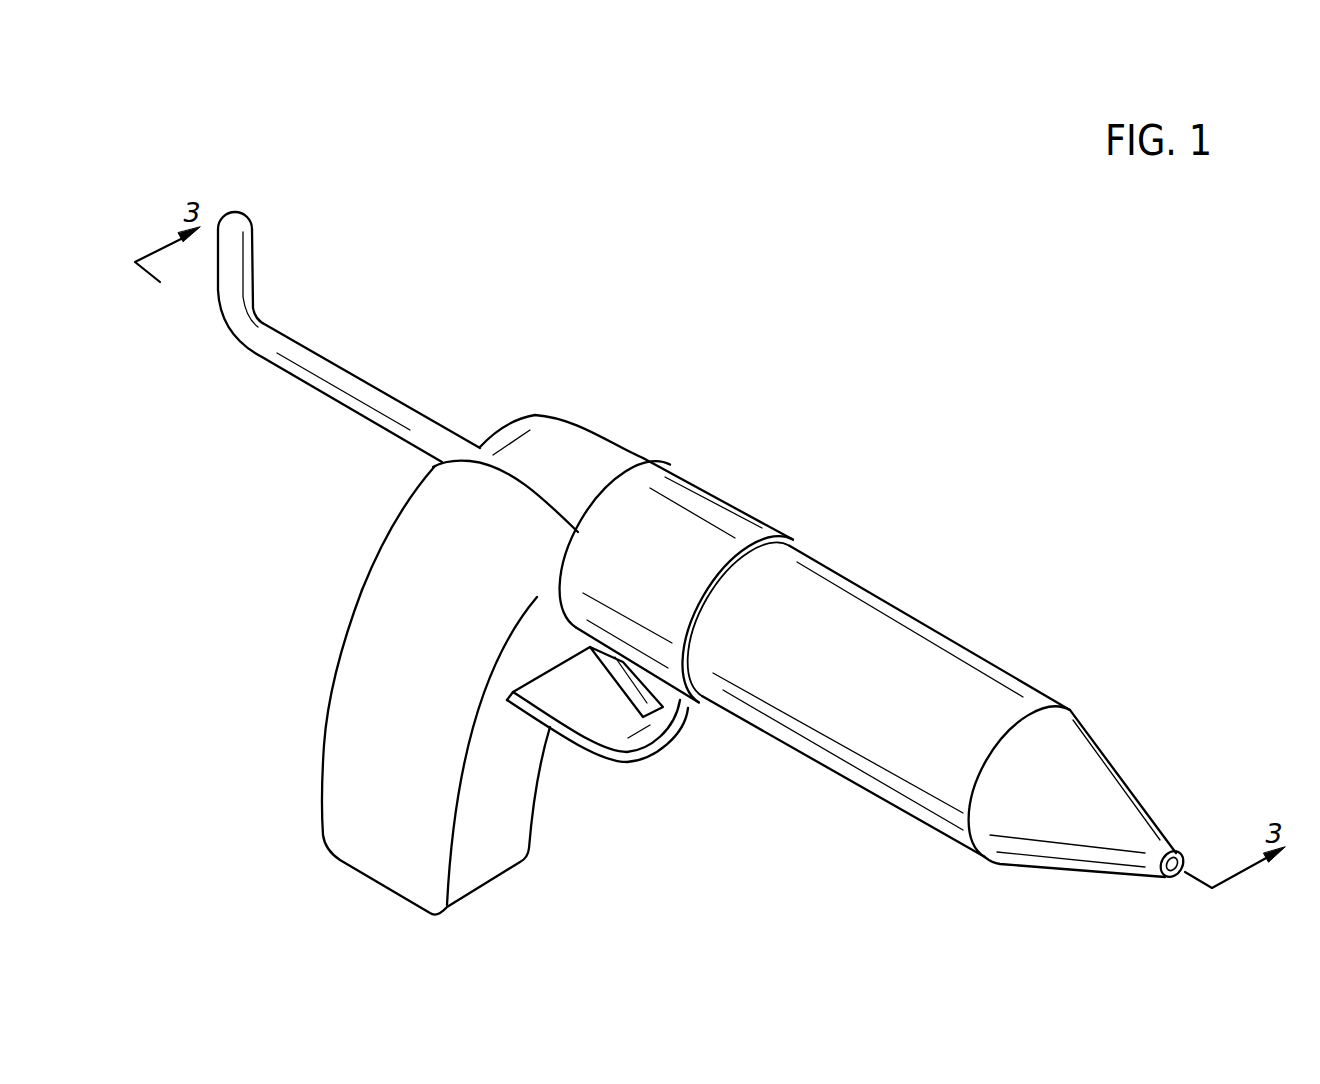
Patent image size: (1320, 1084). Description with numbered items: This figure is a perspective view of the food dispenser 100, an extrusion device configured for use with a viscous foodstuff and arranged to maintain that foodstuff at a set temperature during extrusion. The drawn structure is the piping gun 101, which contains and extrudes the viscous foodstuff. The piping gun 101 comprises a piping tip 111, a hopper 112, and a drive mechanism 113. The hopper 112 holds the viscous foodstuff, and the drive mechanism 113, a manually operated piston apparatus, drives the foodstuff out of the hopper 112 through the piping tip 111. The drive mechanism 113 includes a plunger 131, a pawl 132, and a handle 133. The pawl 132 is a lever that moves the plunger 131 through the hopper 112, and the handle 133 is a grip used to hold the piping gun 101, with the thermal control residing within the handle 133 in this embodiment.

The food dispenser 100 is at (178, 170).
The piping gun 101 is at (560, 416).
The piping tip 111 is at (1095, 787).
The hopper 112 is at (898, 643).
The drive mechanism 113 is at (643, 458).
The plunger 131 is at (338, 363).
The pawl 132 is at (648, 695).
The handle 133 is at (403, 838).